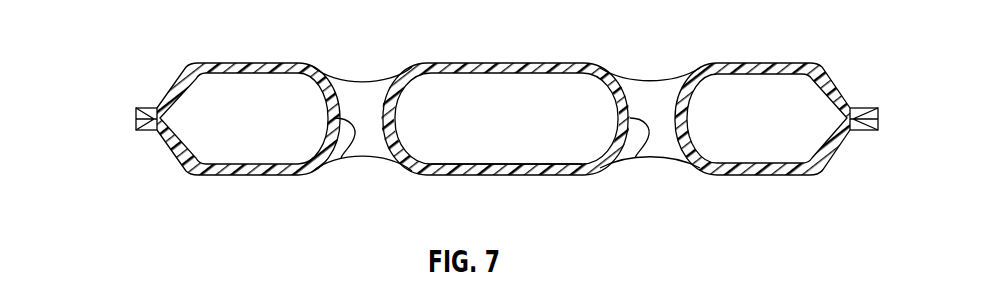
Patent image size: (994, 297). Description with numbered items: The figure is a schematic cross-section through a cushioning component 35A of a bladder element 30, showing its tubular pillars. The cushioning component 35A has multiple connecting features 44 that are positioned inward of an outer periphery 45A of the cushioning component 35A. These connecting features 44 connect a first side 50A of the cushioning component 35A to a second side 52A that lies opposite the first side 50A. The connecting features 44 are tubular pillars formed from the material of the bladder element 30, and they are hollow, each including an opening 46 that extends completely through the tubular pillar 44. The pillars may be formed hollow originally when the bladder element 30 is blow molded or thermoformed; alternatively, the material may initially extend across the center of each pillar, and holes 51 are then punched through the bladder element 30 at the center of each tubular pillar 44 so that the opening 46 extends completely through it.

The bladder element 30 is at (812, 28).
The cushioning component 35A is at (246, 63).
The connecting features 44 is at (341, 158).
The outer periphery 45A is at (138, 116).
The opening 46 is at (358, 95).
The first side 50A is at (505, 63).
The holes 51 is at (372, 130).
The second side 52A is at (502, 174).